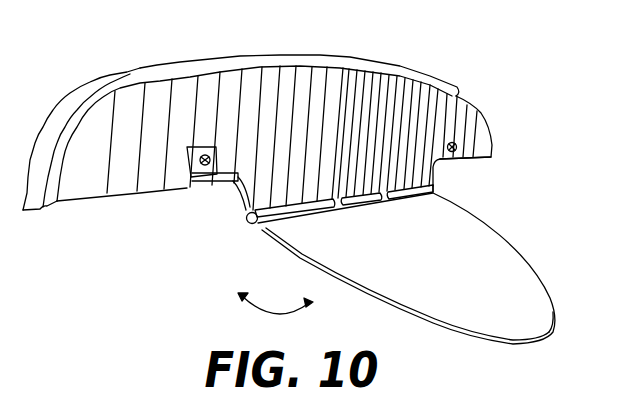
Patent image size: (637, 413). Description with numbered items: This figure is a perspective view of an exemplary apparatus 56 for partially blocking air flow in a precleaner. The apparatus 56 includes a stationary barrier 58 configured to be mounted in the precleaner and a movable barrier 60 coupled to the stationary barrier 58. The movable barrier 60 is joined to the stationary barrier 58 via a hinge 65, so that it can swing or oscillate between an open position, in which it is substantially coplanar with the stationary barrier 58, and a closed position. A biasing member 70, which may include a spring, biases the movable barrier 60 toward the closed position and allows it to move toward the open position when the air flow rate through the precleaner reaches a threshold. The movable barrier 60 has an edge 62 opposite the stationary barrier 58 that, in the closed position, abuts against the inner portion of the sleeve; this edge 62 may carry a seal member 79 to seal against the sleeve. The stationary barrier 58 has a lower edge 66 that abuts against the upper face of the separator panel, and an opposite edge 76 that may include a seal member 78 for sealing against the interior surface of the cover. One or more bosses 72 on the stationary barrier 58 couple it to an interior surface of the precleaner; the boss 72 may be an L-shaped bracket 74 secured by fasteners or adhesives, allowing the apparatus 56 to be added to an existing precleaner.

The apparatus for partially blocking airflow 56 is at (433, 47).
The stationary barrier 58 is at (480, 117).
The movable barrier 60 is at (464, 291).
The edge 62 is at (545, 341).
The hinge 65 is at (433, 190).
The lower edge 66 is at (123, 196).
The biasing member 70 is at (405, 203).
The boss 72 is at (211, 180).
The bracket 74 is at (190, 162).
The edge 76 is at (182, 76).
The seal member 78 is at (128, 72).
The seal member 79 is at (490, 345).